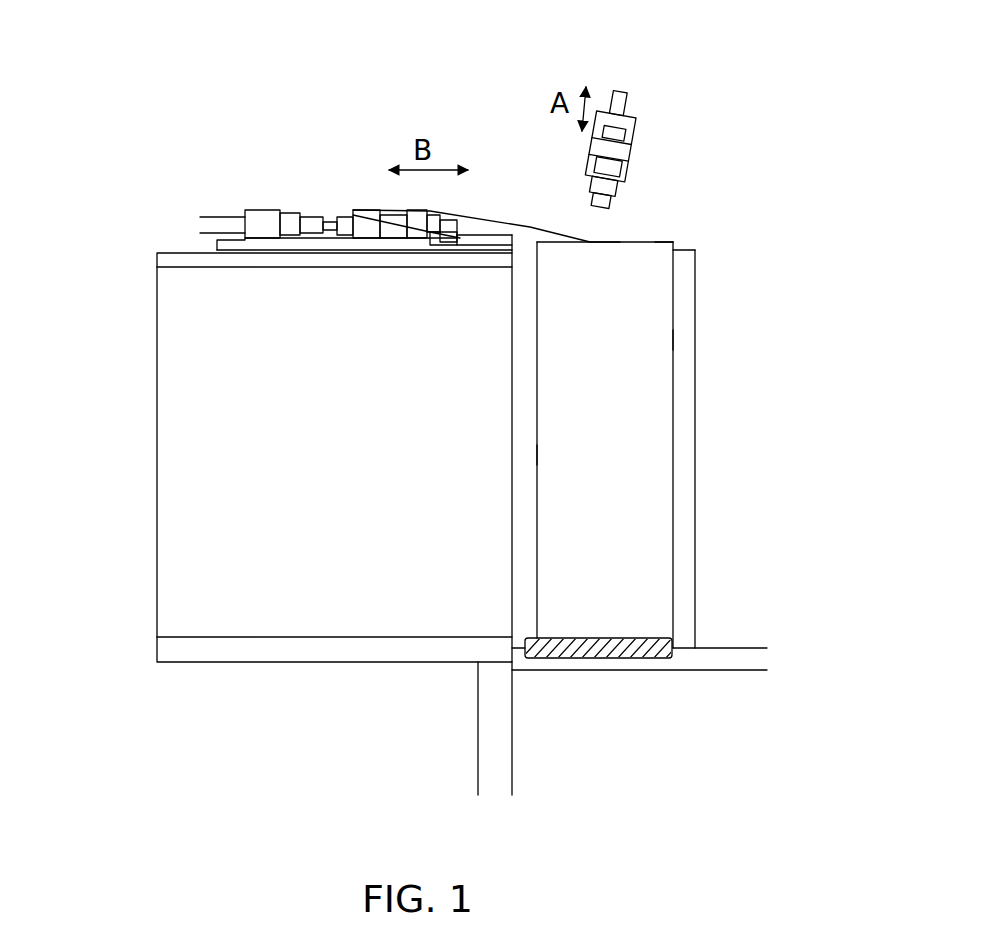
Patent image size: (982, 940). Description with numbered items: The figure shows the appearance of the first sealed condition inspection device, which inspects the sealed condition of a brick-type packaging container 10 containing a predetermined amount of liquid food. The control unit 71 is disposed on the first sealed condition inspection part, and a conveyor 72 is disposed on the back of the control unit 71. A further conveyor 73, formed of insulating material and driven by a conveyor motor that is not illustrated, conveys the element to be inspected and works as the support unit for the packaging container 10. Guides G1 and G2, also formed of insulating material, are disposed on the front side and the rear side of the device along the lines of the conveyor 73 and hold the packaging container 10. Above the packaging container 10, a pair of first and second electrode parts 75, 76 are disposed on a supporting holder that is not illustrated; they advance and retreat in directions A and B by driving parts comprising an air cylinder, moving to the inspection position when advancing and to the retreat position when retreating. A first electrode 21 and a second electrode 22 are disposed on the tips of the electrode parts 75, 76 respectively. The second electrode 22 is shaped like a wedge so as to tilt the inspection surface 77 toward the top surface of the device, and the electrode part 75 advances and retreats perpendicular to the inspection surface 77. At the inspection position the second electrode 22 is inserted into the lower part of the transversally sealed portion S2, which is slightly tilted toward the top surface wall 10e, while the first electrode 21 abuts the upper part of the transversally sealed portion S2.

The brick-type packaging container 10 is at (647, 435).
The top surface wall 10e is at (657, 240).
The first electrode 21 is at (598, 236).
The second electrode 22 is at (488, 221).
The control unit 71 is at (182, 448).
The conveyor 72 is at (730, 632).
The conveyor 73 is at (588, 660).
The first electrode part 75 is at (650, 123).
The second electrode part 76 is at (346, 193).
The inspection surface 77 is at (537, 242).
The guide G1 is at (523, 457).
The guide G2 is at (682, 340).
The transversally sealed portion S2 is at (606, 240).